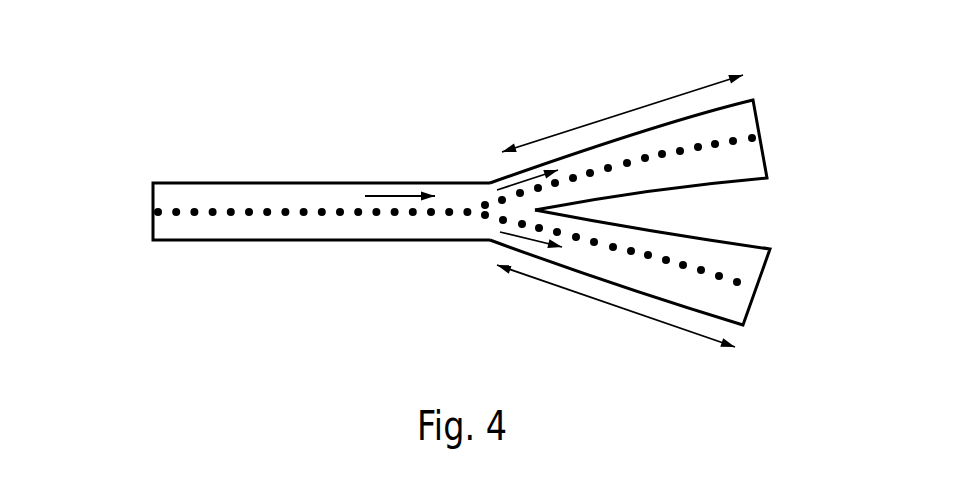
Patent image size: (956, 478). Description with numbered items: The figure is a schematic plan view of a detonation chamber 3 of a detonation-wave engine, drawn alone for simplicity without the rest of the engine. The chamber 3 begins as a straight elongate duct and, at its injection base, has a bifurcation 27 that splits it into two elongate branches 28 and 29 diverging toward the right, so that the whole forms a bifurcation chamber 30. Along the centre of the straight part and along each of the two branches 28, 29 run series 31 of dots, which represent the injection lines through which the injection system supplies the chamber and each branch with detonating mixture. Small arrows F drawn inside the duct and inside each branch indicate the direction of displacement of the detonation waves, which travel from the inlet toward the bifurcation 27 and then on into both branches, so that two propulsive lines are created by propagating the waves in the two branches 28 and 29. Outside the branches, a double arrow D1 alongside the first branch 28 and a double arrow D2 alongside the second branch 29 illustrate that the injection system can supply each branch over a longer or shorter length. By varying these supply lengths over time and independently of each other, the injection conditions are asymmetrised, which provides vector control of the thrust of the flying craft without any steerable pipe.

The detonation chamber 3 is at (132, 180).
The bifurcation 27 is at (472, 172).
The elongate branch 28 is at (765, 127).
The elongate branch 29 is at (758, 288).
The bifurcation chamber 30 is at (480, 105).
The series of dots representing injection lines 31 is at (325, 205).
The arrows showing direction of displacement of detonation waves F is at (388, 196).
The double arrow indicating supply length of first branch D1 is at (613, 110).
The double arrow indicating supply length of second branch D2 is at (605, 298).